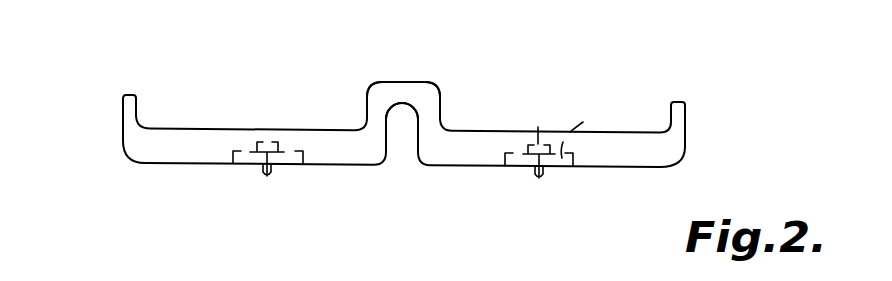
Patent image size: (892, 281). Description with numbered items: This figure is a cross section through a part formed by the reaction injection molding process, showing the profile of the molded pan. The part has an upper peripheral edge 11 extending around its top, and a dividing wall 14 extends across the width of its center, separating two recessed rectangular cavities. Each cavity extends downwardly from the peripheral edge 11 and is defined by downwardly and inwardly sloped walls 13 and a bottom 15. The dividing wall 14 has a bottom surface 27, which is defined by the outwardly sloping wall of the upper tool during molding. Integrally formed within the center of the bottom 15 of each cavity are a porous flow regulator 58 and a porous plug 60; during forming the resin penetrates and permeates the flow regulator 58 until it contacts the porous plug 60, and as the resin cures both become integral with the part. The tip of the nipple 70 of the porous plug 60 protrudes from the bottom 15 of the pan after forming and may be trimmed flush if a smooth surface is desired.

The upper peripheral edge 11 is at (130, 94).
The sloped walls 13 is at (137, 141).
The dividing wall 14 is at (440, 84).
The bottom 15 is at (468, 148).
The bottom surface 27 is at (416, 135).
The porous flow regulator 58 is at (585, 121).
The porous plug 60 is at (538, 127).
The nipple 70 is at (266, 177).